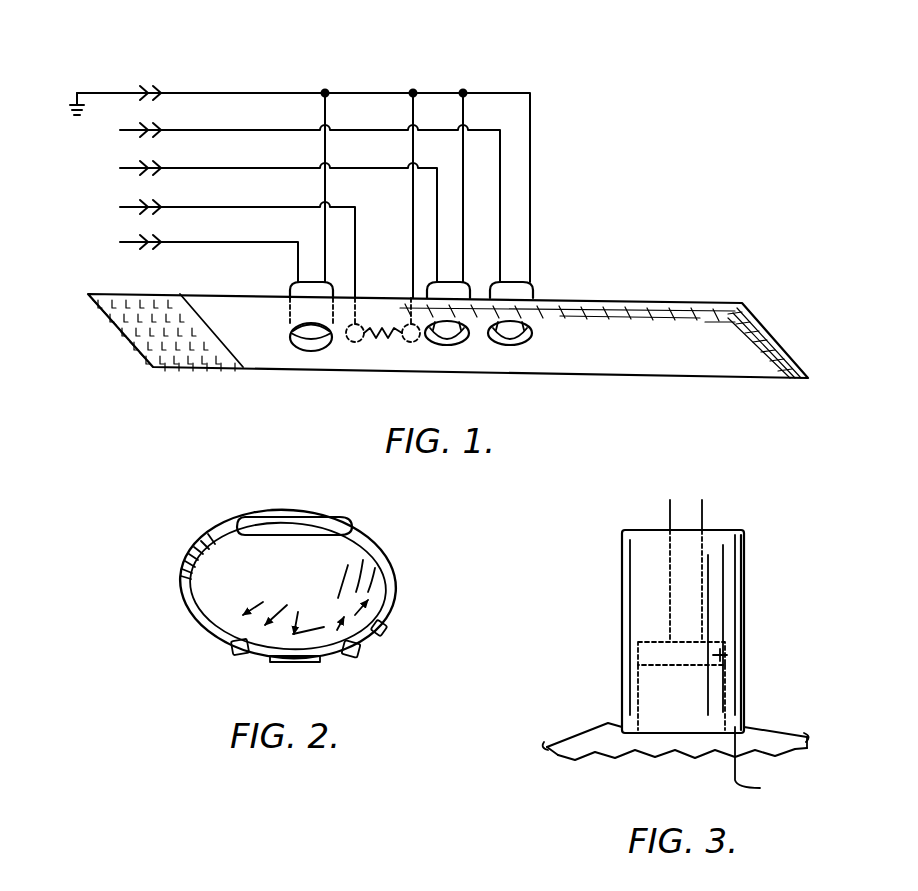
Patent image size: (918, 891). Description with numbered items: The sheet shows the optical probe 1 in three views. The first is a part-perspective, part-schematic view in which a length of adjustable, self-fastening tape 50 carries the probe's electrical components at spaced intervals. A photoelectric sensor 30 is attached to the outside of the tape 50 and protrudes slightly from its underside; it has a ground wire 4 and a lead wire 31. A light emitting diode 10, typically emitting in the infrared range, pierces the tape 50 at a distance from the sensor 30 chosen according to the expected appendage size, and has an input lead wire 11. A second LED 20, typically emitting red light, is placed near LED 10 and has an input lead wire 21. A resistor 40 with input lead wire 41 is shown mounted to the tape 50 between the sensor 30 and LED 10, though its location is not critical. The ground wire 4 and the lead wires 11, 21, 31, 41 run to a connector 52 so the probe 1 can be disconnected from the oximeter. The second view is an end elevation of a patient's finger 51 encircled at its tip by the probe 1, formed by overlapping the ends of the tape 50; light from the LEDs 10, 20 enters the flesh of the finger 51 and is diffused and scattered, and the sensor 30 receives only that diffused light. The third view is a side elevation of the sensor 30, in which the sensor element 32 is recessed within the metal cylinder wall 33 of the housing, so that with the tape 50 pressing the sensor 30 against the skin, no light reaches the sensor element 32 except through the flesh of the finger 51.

In FIG. 1, the optical probe 1 is at (652, 183).
In FIG. 2, the optical probe 1 is at (434, 538).
In FIG. 1, the ground lead 4 is at (300, 182).
In FIG. 3, the ground lead 4 is at (711, 484).
In FIG. 1, the light emitting diode 10 is at (442, 345).
In FIG. 2, the light emitting diode 10 is at (352, 657).
In FIG. 1, the input lead wire 11 is at (269, 219).
In FIG. 1, the second LED 20 is at (510, 345).
In FIG. 2, the second LED 20 is at (384, 634).
In FIG. 1, the input lead wire 21 is at (301, 200).
In FIG. 1, the photoelectric sensor 30 is at (300, 368).
In FIG. 2, the photoelectric sensor 30 is at (236, 656).
In FIG. 3, the photoelectric sensor 30 is at (754, 566).
In FIG. 1, the lead wire 31 is at (200, 256).
In FIG. 3, the lead wire 31 is at (679, 484).
In FIG. 3, the sensor element 32 is at (745, 653).
In FIG. 3, the metal cylinder wall 33 is at (762, 765).
In FIG. 1, the resistor 40 is at (362, 342).
In FIG. 2, the resistor 40 is at (292, 660).
In FIG. 1, the input lead wire 41 is at (228, 247).
In FIG. 1, the adjustable self-fastening tape 50 is at (653, 315).
In FIG. 2, the adjustable self-fastening tape 50 is at (393, 598).
In FIG. 3, the adjustable self-fastening tape 50 is at (752, 728).
In FIG. 2, the finger 51 is at (306, 576).
In FIG. 3, the finger 51 is at (656, 750).
In FIG. 1, the connector 52 is at (165, 93).